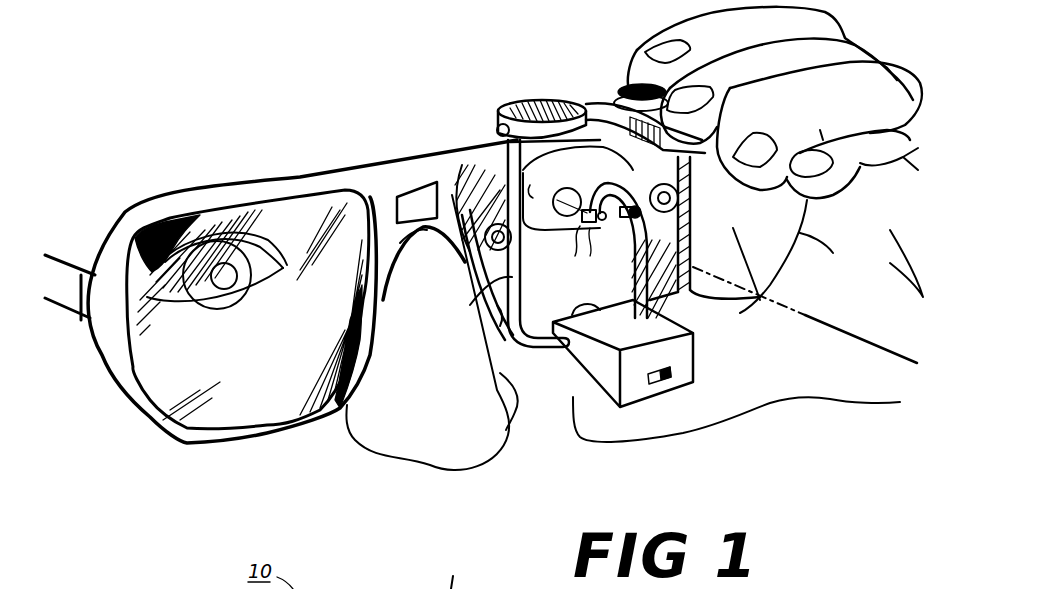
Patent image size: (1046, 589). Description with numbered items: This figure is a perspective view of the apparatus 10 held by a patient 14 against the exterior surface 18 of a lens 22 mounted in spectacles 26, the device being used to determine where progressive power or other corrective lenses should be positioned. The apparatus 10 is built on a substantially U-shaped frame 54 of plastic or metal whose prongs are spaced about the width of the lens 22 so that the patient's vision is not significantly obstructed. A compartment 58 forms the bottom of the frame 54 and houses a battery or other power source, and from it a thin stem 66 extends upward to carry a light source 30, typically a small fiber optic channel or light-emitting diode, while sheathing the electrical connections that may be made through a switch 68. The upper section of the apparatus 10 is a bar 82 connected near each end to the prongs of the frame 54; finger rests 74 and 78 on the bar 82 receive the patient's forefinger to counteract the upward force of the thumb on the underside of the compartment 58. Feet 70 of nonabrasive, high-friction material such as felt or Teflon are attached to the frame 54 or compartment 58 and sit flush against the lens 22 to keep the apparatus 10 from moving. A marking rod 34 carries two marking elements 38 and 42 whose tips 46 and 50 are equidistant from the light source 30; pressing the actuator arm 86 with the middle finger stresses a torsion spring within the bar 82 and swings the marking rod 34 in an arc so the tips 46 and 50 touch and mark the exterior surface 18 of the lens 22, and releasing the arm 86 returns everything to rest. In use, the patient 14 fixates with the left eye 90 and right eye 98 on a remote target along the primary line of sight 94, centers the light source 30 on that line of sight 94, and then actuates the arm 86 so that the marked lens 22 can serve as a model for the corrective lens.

The apparatus 10 is at (587, 72).
The patient 14 is at (415, 482).
The exterior surface 18 is at (505, 322).
The lens 22 is at (257, 400).
The spectacles 26 is at (355, 172).
The light source 30 is at (577, 215).
The marking rod 34 is at (617, 143).
The marking element 38 is at (640, 220).
The marking element 42 is at (599, 243).
The tip 46 is at (645, 238).
The tip 50 is at (565, 251).
The frame 54 is at (486, 296).
The compartment 58 is at (582, 375).
The stem 66 is at (665, 296).
The switch 68 is at (672, 377).
The feet 70 is at (483, 245).
The finger rest 74 is at (626, 86).
The finger rest 78 is at (532, 104).
The bar 82 is at (497, 126).
The actuator arm 86 is at (741, 111).
The left eye 90 is at (523, 185).
The primary line of sight 94 is at (833, 324).
The right eye 98 is at (237, 247).